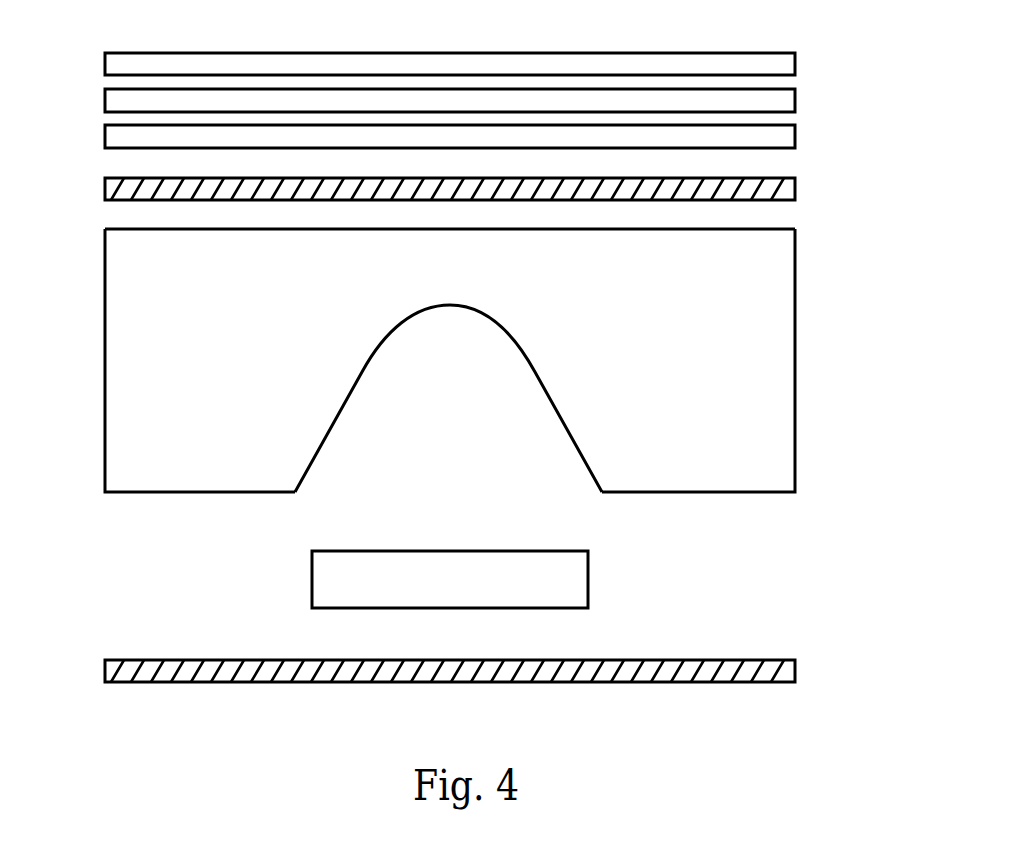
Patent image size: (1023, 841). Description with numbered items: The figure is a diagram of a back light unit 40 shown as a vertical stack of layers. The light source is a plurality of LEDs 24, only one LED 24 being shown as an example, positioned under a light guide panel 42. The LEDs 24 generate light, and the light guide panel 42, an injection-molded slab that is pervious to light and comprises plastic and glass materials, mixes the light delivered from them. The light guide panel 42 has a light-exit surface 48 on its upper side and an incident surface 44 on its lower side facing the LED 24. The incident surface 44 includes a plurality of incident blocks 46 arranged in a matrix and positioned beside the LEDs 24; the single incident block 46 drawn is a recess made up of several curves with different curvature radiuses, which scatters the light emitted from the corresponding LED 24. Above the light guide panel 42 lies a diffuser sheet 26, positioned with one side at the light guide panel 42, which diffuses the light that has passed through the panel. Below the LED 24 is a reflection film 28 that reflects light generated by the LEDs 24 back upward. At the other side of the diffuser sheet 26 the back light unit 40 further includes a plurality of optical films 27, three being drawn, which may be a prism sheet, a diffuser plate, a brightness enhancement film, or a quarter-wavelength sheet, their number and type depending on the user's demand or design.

The optical films 27 is at (98, 53).
The diffuser sheet 26 is at (797, 191).
The light-exit surface 48 is at (760, 228).
The light guide panel 42 is at (516, 352).
The incident block 46 is at (574, 437).
The incident surface 44 is at (697, 490).
The LED 24 is at (590, 583).
The reflection film 28 is at (797, 673).
The back light unit 40 is at (931, 685).